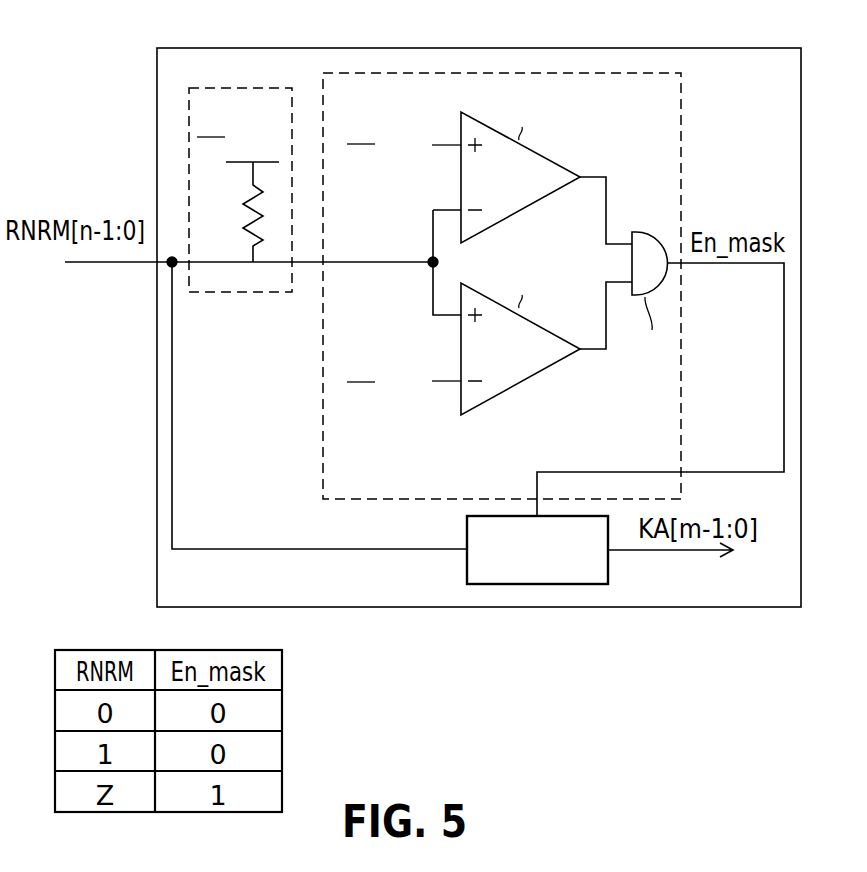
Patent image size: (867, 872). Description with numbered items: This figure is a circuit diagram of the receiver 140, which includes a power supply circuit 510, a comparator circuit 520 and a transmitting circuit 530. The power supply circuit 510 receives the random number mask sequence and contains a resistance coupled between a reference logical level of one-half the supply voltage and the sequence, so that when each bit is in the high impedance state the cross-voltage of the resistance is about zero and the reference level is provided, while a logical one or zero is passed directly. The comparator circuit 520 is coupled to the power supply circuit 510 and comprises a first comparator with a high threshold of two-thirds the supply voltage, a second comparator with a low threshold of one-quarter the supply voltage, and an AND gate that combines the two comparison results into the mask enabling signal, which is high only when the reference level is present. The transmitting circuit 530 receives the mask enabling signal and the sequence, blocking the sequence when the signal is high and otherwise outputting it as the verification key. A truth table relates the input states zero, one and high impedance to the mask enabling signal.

The receiver 140 is at (731, 47).
The power supply circuit 510 is at (258, 292).
The comparator circuit 520 is at (681, 135).
The transmitting circuit 530 is at (577, 584).